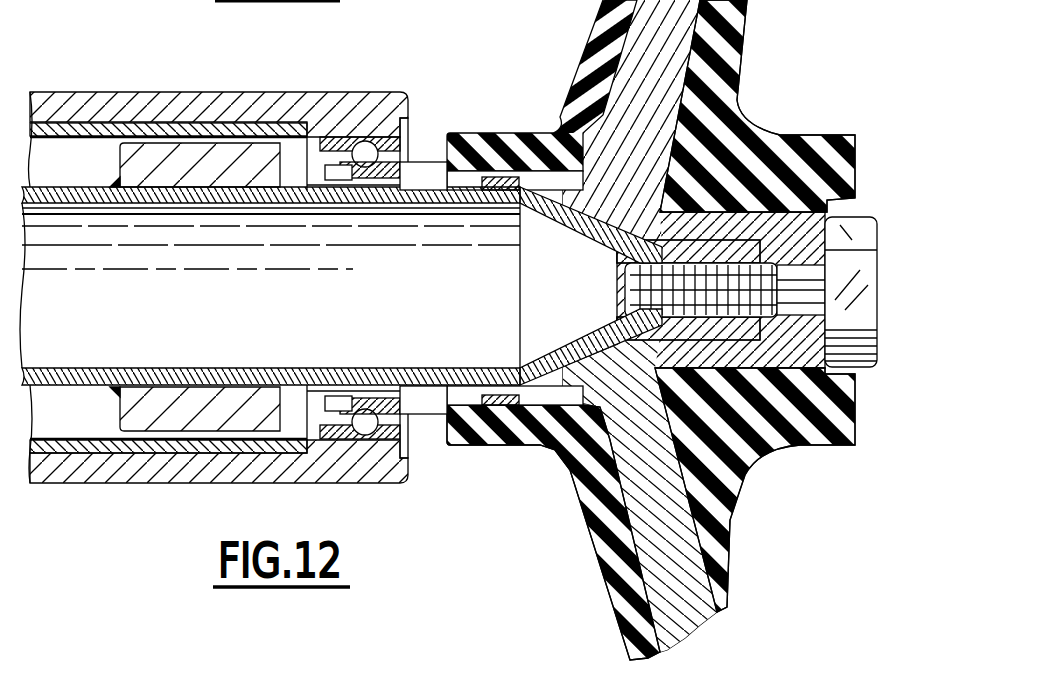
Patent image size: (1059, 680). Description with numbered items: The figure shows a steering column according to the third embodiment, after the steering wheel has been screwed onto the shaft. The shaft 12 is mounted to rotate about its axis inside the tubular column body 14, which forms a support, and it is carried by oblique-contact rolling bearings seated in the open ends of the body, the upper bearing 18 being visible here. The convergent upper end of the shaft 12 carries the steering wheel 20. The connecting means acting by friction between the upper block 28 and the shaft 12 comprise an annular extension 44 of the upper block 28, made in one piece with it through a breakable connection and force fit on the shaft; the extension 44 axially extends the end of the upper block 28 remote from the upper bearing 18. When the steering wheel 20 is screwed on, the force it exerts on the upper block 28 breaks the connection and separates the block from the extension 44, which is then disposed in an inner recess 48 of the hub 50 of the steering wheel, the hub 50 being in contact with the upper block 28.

The shaft 12 is at (60, 175).
The tubular column body 14 is at (118, 88).
The upper bearing 18 is at (343, 140).
The steering wheel 20 is at (744, 140).
The upper block 28 is at (427, 168).
The annular extension 44 is at (523, 133).
The inner recess 48 is at (467, 177).
The hub 50 is at (485, 446).